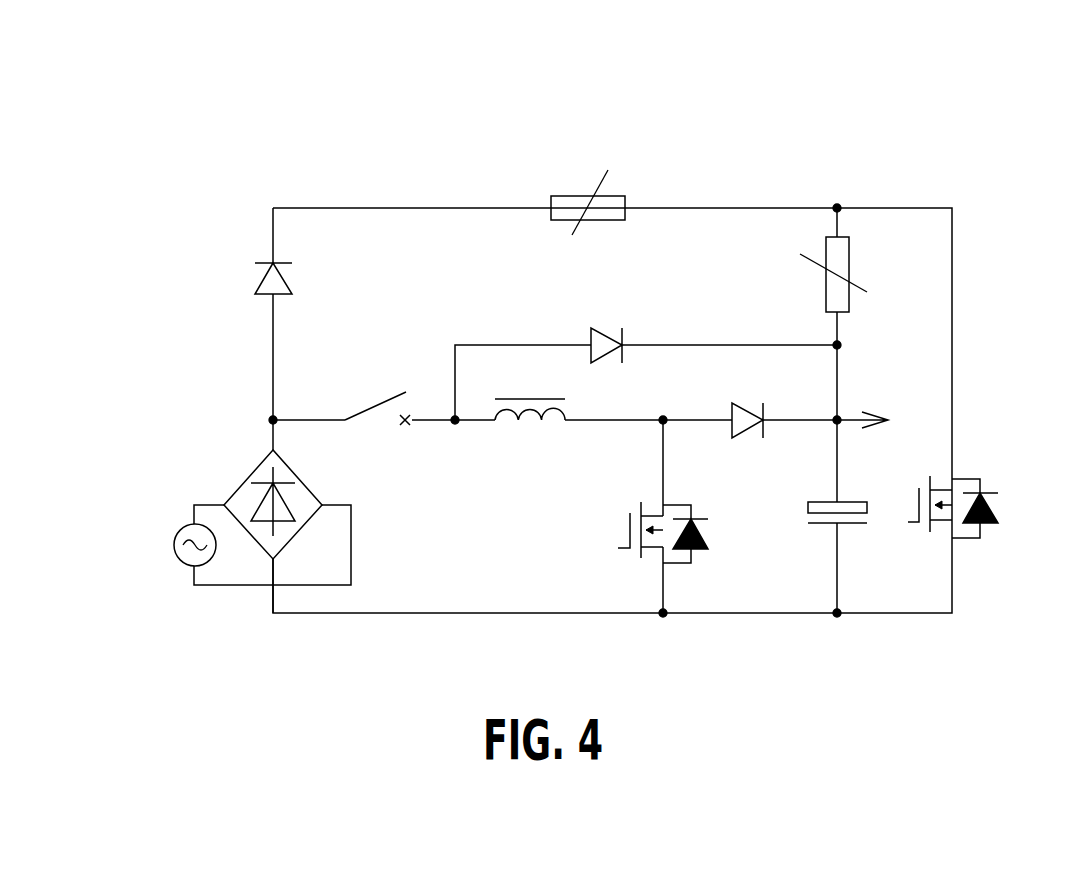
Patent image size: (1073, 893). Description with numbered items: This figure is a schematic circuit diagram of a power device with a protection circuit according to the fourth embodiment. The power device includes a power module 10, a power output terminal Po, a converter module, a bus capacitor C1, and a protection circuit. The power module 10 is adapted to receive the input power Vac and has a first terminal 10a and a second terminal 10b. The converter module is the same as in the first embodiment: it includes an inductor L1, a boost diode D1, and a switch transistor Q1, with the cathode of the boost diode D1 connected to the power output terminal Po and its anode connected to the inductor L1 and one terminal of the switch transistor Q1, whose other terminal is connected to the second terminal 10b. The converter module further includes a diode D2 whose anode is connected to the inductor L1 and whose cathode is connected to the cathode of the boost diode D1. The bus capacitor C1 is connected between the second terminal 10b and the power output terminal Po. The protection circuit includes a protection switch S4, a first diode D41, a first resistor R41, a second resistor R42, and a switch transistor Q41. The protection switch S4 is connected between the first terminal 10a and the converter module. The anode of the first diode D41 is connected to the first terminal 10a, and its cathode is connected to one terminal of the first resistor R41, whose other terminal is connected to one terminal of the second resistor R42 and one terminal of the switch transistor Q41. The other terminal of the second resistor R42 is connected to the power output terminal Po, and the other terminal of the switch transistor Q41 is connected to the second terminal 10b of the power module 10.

The power module 10 is at (202, 493).
The first terminal 10a is at (245, 445).
The second terminal 10b is at (249, 593).
The input power Vac is at (169, 545).
The first diode D41 is at (247, 281).
The protection switch S4 is at (377, 423).
The inductor L1 is at (530, 429).
The diode D2 is at (625, 357).
The boost diode D1 is at (748, 440).
The first resistor R41 is at (586, 194).
The second resistor R42 is at (856, 274).
The power output terminal Po is at (887, 417).
The switch transistor Q1 is at (645, 532).
The bus capacitor C1 is at (832, 531).
The switch transistor Q41 is at (980, 507).